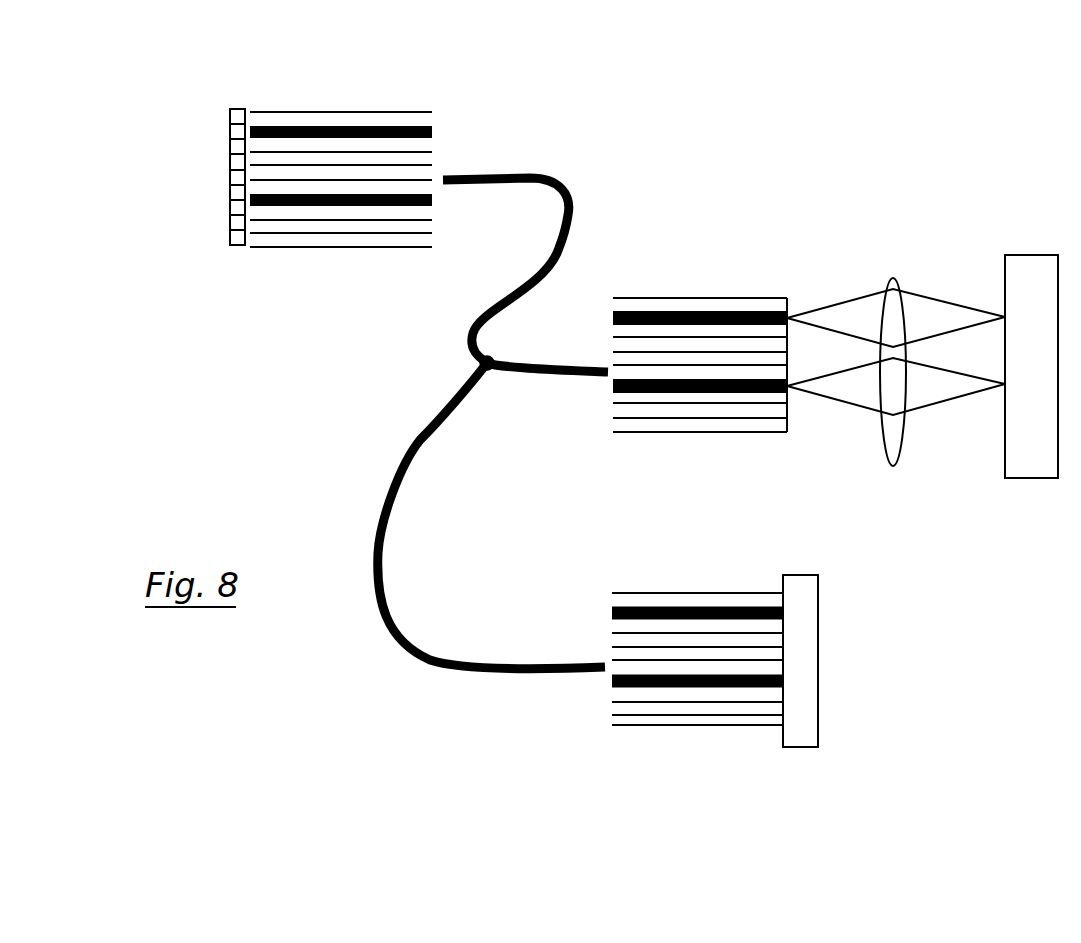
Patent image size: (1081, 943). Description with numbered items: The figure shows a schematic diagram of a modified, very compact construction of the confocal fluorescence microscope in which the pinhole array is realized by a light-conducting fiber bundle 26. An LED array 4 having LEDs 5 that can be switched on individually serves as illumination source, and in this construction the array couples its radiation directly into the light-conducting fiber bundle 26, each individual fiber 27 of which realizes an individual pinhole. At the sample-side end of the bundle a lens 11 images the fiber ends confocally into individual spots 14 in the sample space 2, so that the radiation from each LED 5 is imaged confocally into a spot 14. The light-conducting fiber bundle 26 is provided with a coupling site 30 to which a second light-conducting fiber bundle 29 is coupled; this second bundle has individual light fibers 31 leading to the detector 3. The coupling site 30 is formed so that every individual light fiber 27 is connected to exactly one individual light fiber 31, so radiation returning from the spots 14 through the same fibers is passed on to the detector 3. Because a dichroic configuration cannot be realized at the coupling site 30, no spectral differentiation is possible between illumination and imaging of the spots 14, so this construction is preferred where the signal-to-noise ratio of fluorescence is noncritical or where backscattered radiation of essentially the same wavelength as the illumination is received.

The sample space 2 is at (1012, 280).
The detector 3 is at (803, 742).
The LED array 4 is at (232, 108).
The LED 5 is at (228, 198).
The lens 11 is at (893, 280).
The individual spot 14 is at (1002, 386).
The light-conducting fiber bundle 26 is at (569, 210).
The individual fiber 27 is at (400, 118).
The light-conducting fiber bundle 29 is at (418, 437).
The coupling site 30 is at (489, 371).
The individual light fiber 31 is at (623, 722).